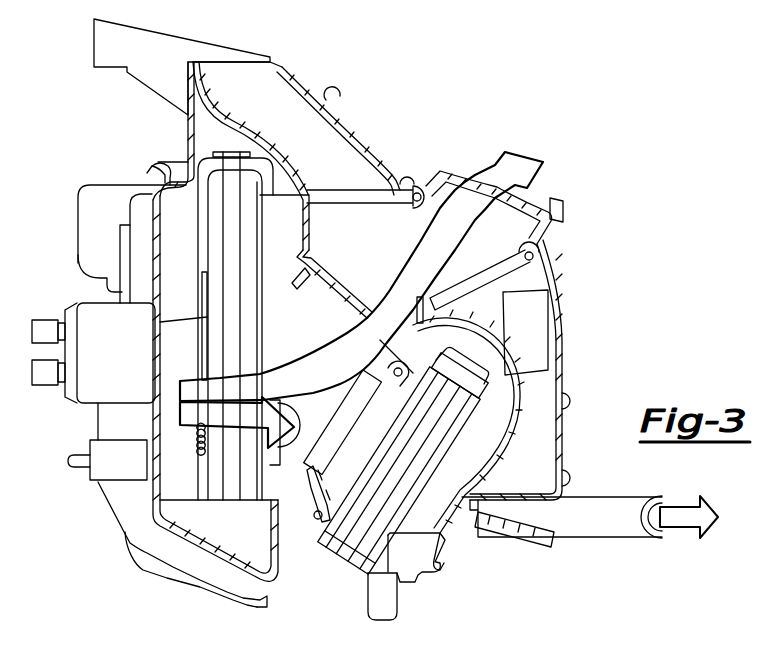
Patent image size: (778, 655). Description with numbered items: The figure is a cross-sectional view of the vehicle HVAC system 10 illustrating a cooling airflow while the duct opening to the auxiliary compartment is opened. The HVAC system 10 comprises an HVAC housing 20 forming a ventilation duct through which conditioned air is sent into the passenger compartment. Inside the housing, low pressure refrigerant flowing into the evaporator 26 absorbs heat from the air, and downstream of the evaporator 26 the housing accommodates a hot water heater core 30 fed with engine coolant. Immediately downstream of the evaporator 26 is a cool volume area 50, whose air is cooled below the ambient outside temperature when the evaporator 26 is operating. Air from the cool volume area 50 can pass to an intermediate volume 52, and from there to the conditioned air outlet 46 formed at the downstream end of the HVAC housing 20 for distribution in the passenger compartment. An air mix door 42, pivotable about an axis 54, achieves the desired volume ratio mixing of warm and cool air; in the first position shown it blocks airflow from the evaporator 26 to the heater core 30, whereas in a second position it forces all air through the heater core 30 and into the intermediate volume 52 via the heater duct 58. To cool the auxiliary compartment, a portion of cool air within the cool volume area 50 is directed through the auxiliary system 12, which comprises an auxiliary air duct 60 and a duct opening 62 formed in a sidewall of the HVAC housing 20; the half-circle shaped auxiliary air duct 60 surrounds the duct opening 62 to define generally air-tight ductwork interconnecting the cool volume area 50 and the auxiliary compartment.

The HVAC system 10 is at (437, 85).
The auxiliary system 12 is at (483, 557).
The HVAC housing 20 is at (563, 323).
The evaporator 26 is at (157, 163).
The heater core 30 is at (350, 538).
The air mix door 42 is at (333, 400).
The conditioned air outlet 46 is at (442, 174).
The cool volume area 50 is at (290, 246).
The intermediate volume 52 is at (376, 262).
The axis 54 is at (405, 375).
The heater duct 58 is at (451, 492).
The auxiliary air duct 60 is at (618, 533).
The duct opening 62 is at (290, 440).